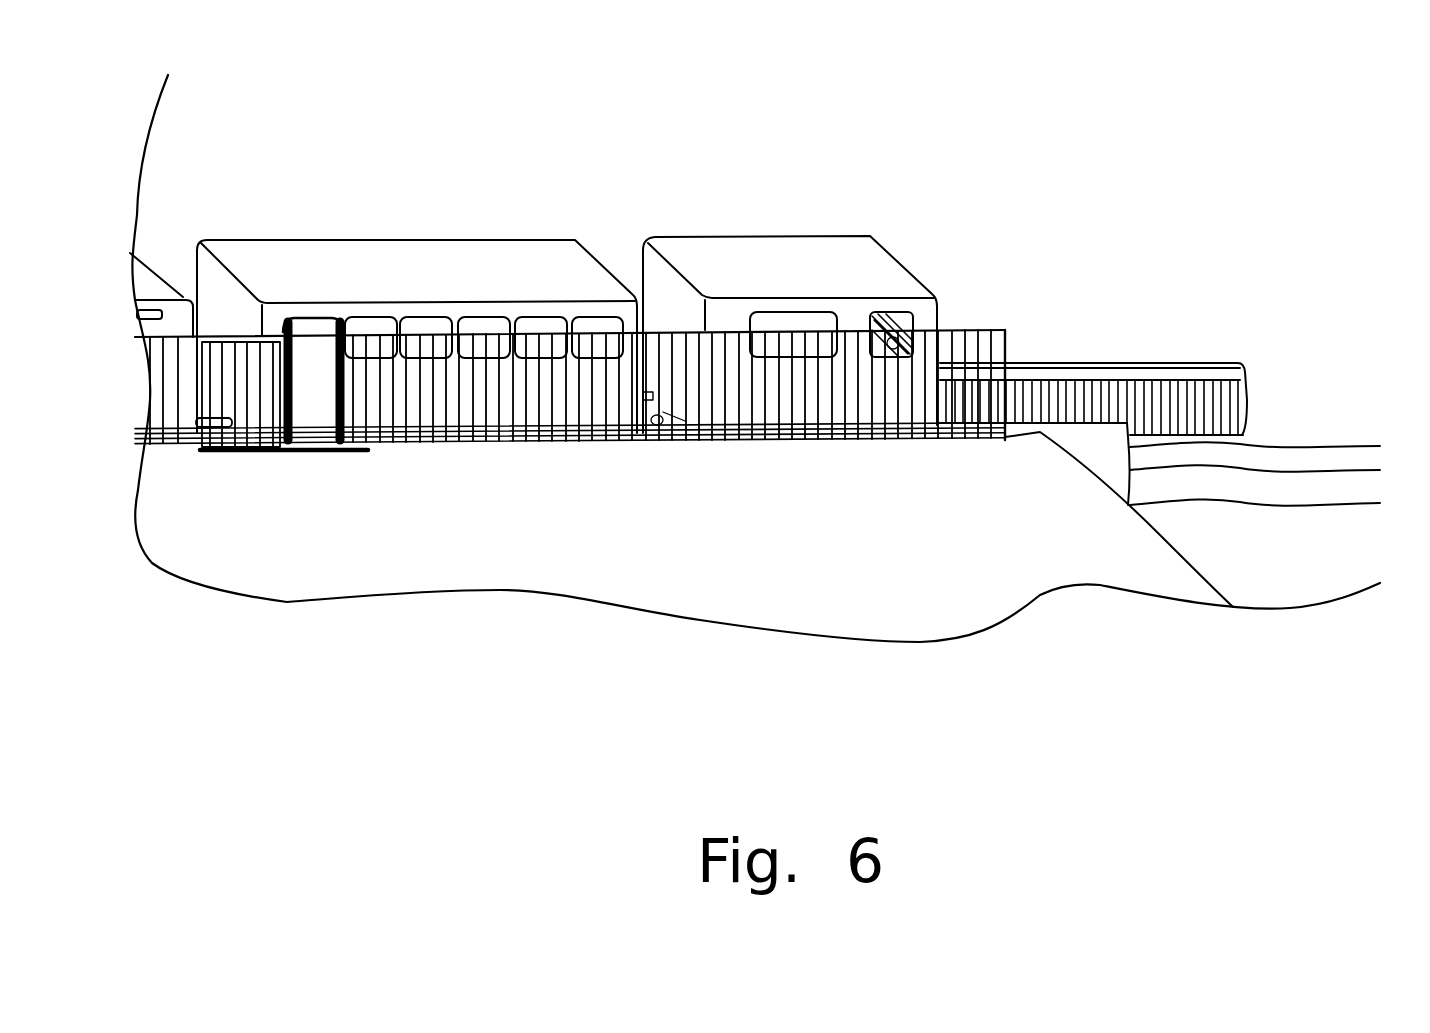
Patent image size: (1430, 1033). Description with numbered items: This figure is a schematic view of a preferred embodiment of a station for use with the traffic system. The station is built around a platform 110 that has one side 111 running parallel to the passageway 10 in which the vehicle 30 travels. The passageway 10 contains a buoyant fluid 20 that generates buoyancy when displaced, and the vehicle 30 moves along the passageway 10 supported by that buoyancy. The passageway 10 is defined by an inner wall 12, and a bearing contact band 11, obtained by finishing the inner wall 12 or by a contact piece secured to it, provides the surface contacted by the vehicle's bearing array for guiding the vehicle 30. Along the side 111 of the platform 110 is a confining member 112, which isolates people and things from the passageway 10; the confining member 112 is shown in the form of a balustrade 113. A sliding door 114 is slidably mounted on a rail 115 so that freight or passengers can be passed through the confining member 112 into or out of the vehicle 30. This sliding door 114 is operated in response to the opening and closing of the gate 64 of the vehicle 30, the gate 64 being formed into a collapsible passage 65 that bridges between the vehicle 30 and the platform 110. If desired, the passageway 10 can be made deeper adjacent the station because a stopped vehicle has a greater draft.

The passageway 10 is at (1151, 459).
The bearing contact band 11 is at (1213, 410).
The inner wall 12 is at (1180, 372).
The buoyant fluid 20 is at (1310, 480).
The vehicle 30 is at (822, 257).
The gate 64 is at (362, 331).
The collapsible passage 65 is at (399, 528).
The platform 110 is at (937, 565).
The side of platform 111 is at (604, 336).
The confining member 112 is at (976, 294).
The balustrade 113 is at (993, 338).
The sliding door 114 is at (257, 453).
The rail 115 is at (350, 448).